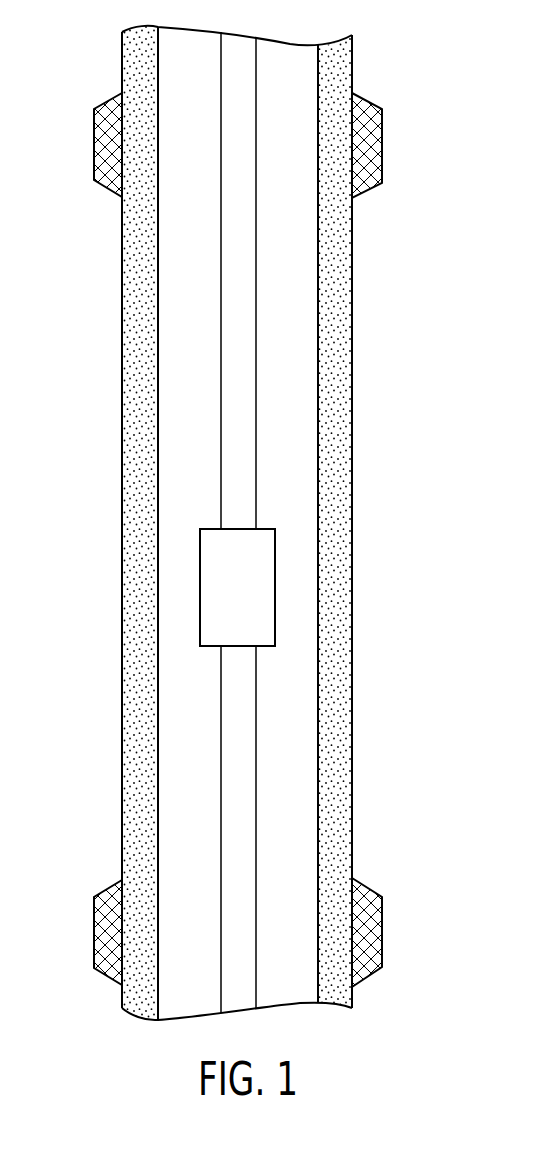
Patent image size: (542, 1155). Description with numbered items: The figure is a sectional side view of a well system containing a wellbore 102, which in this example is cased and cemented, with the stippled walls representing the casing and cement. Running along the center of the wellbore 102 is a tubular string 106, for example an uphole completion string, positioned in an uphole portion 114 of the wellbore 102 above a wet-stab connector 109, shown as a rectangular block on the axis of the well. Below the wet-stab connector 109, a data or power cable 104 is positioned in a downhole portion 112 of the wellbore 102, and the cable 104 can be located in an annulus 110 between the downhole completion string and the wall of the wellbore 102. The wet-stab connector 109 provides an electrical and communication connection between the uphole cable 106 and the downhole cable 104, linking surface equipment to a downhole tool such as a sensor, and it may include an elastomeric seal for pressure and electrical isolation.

The wellbore 102 is at (157, 463).
The data or power cable 104 is at (242, 835).
The tubular string 106 is at (242, 393).
The wet-stab connector 109 is at (218, 613).
The annulus 110 is at (166, 788).
The downhole portion 112 is at (308, 657).
The uphole portion 114 is at (178, 317).